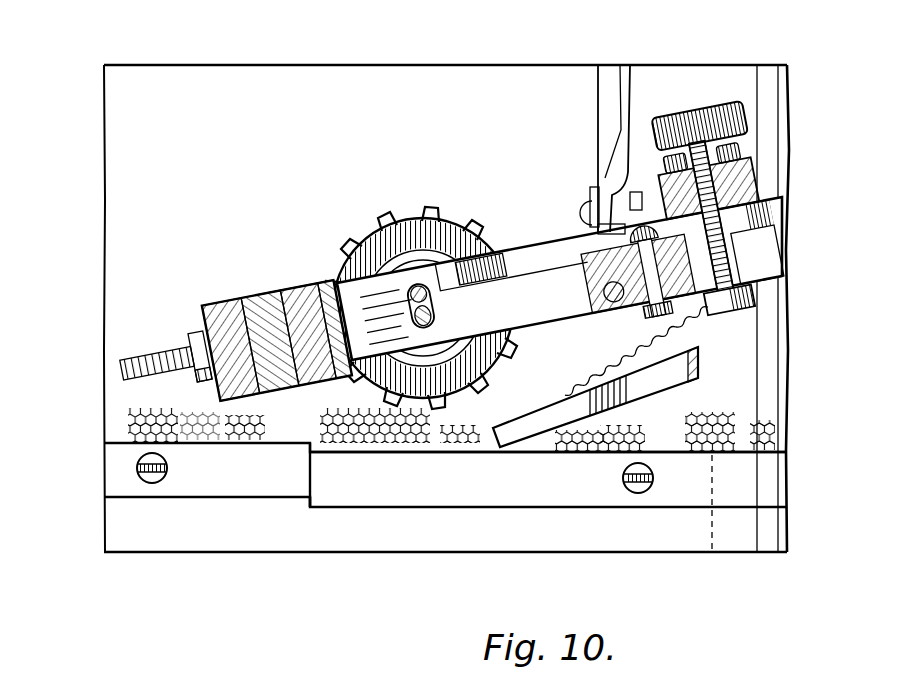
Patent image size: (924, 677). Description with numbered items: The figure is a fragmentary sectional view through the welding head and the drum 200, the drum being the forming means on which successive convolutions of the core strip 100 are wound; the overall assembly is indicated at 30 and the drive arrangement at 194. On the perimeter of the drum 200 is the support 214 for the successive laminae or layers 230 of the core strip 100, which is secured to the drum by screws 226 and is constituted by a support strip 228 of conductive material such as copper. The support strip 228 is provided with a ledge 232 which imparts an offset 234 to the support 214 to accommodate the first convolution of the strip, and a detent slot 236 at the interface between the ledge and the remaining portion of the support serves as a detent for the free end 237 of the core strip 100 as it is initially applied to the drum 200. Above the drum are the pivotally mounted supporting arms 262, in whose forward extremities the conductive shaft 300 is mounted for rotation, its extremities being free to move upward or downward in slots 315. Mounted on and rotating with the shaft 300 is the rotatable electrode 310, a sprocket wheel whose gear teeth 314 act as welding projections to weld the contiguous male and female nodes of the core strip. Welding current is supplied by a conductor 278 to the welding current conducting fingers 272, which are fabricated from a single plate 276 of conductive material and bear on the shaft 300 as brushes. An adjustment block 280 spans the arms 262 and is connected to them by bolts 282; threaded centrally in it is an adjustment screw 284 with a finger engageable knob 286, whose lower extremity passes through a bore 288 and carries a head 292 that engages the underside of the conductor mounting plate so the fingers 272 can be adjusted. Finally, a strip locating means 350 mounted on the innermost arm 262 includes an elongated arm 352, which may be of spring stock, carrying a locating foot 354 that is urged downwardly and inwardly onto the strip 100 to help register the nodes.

The apparatus housing 30 is at (243, 88).
The core strip 100 is at (148, 423).
The drive shaft with hatched block 194 is at (262, 322).
The drum 200 is at (773, 385).
The support 214 is at (762, 473).
The screws 226 is at (138, 460).
The support strip 228 is at (215, 490).
The laminae or layers 230 is at (168, 412).
The ledge 232 is at (310, 455).
The offset 234 is at (758, 445).
The detent slot 236 is at (325, 485).
The free end 237 is at (313, 460).
The supporting arms 262 is at (566, 250).
The welding current conducting fingers 272 is at (423, 288).
The plate 276 is at (760, 218).
The conductor 278 is at (608, 64).
The adjustment block 280 is at (758, 185).
The bolts 282 is at (744, 148).
The adjustment screw 284 is at (752, 165).
The finger engageable knob 286 is at (742, 118).
The bore 288 is at (745, 252).
The head 292 is at (758, 294).
The shaft 300 is at (503, 338).
The rotatable electrode 310 is at (400, 279).
The gear teeth 314 is at (457, 222).
The slots 315 is at (403, 284).
The strip locating means 350 is at (676, 395).
The elongated arm 352 is at (690, 350).
The locating foot 354 is at (536, 428).